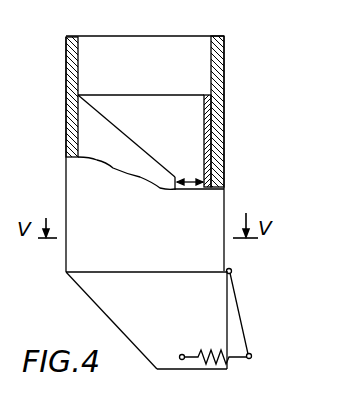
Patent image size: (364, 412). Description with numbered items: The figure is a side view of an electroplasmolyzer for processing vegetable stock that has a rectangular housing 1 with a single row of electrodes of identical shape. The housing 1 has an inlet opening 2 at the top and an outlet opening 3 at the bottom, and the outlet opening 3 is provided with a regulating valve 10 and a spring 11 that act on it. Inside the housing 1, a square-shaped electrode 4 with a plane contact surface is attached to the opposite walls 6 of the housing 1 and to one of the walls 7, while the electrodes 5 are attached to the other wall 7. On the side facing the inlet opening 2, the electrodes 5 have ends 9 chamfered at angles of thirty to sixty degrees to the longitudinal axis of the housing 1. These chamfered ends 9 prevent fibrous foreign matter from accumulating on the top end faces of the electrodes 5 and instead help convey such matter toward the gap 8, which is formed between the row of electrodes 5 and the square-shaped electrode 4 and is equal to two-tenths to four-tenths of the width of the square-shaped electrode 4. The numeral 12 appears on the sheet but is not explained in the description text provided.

The housing 1 is at (66, 196).
The inlet opening 2 is at (166, 36).
The outlet opening 3 is at (225, 308).
The square-shaped electrode 4 is at (121, 98).
The electrodes 5 is at (86, 120).
The opposite walls 6 is at (200, 71).
The wall 7 is at (66, 79).
The gap 8 is at (189, 180).
The chamfered ends 9 is at (124, 135).
The regulating valve 10 is at (245, 333).
The spring 11 is at (208, 348).
The section indicator 12 is at (12, 301).